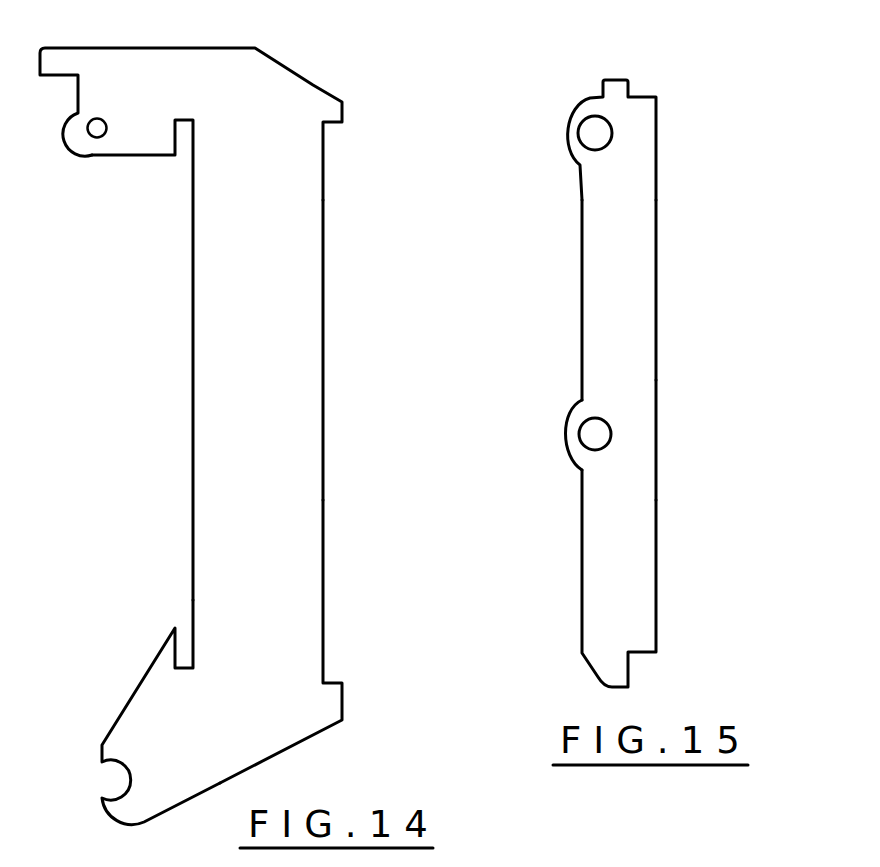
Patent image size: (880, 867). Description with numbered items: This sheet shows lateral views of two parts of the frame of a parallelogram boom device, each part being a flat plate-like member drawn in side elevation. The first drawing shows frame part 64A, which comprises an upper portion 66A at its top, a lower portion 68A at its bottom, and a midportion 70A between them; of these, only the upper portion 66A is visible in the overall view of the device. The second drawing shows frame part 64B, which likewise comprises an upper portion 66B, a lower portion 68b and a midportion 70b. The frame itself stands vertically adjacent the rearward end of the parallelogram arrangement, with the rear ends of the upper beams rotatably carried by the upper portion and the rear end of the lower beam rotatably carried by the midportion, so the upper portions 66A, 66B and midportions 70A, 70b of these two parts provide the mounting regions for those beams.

In FIG. 14, the frame part 64A is at (238, 272).
In FIG. 14, the upper portion 66A is at (253, 90).
In FIG. 14, the lower portion 68A is at (167, 725).
In FIG. 14, the midportion 70A is at (260, 397).
In FIG. 15, the frame part 64B is at (633, 262).
In FIG. 15, the upper portion 66B is at (637, 130).
In FIG. 15, the lower portion 68b is at (622, 600).
In FIG. 15, the midportion 70b is at (630, 398).